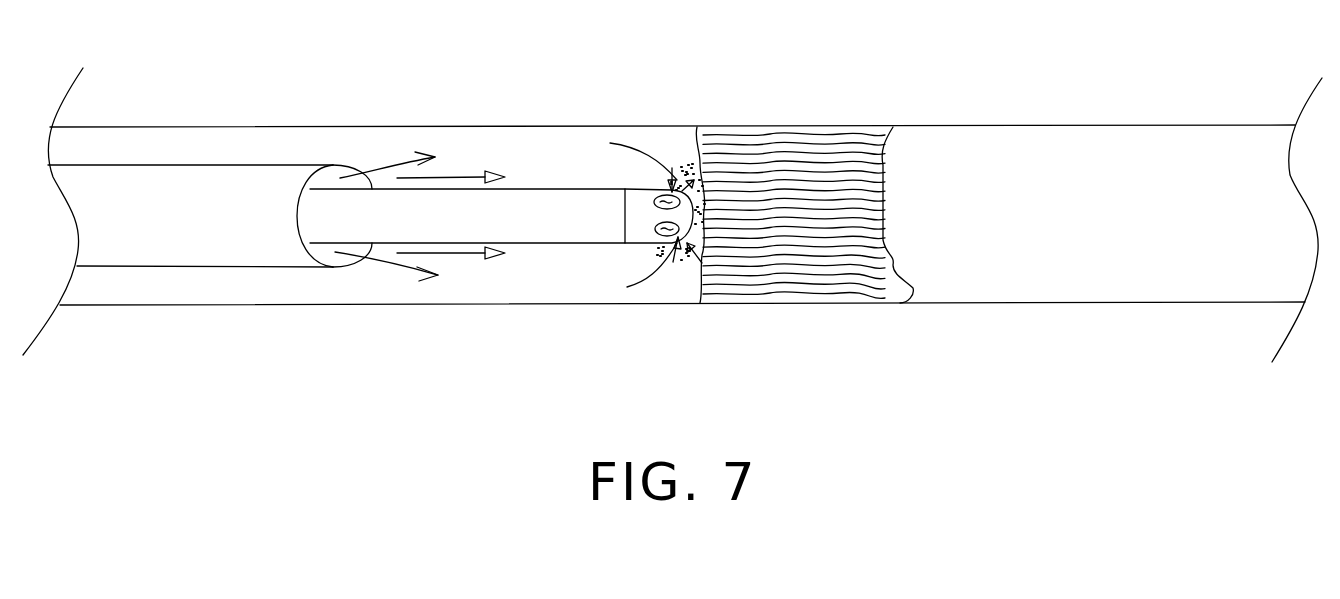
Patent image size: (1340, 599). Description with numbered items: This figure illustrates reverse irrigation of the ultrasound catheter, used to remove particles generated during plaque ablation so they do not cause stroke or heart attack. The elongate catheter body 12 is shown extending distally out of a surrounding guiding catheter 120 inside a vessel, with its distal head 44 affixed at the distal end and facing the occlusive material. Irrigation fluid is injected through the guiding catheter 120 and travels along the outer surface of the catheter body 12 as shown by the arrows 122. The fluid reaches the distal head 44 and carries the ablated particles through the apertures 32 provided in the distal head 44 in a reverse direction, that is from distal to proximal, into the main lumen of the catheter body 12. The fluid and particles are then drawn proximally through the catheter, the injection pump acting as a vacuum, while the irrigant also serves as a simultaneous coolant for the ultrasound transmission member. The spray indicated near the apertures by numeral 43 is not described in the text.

The catheter body 12 is at (525, 200).
The guiding catheter 120 is at (200, 178).
The arrows 122 is at (450, 175).
The apertures 32 is at (656, 194).
The distal head 44 is at (637, 228).
The fluid jets 43 is at (640, 148).